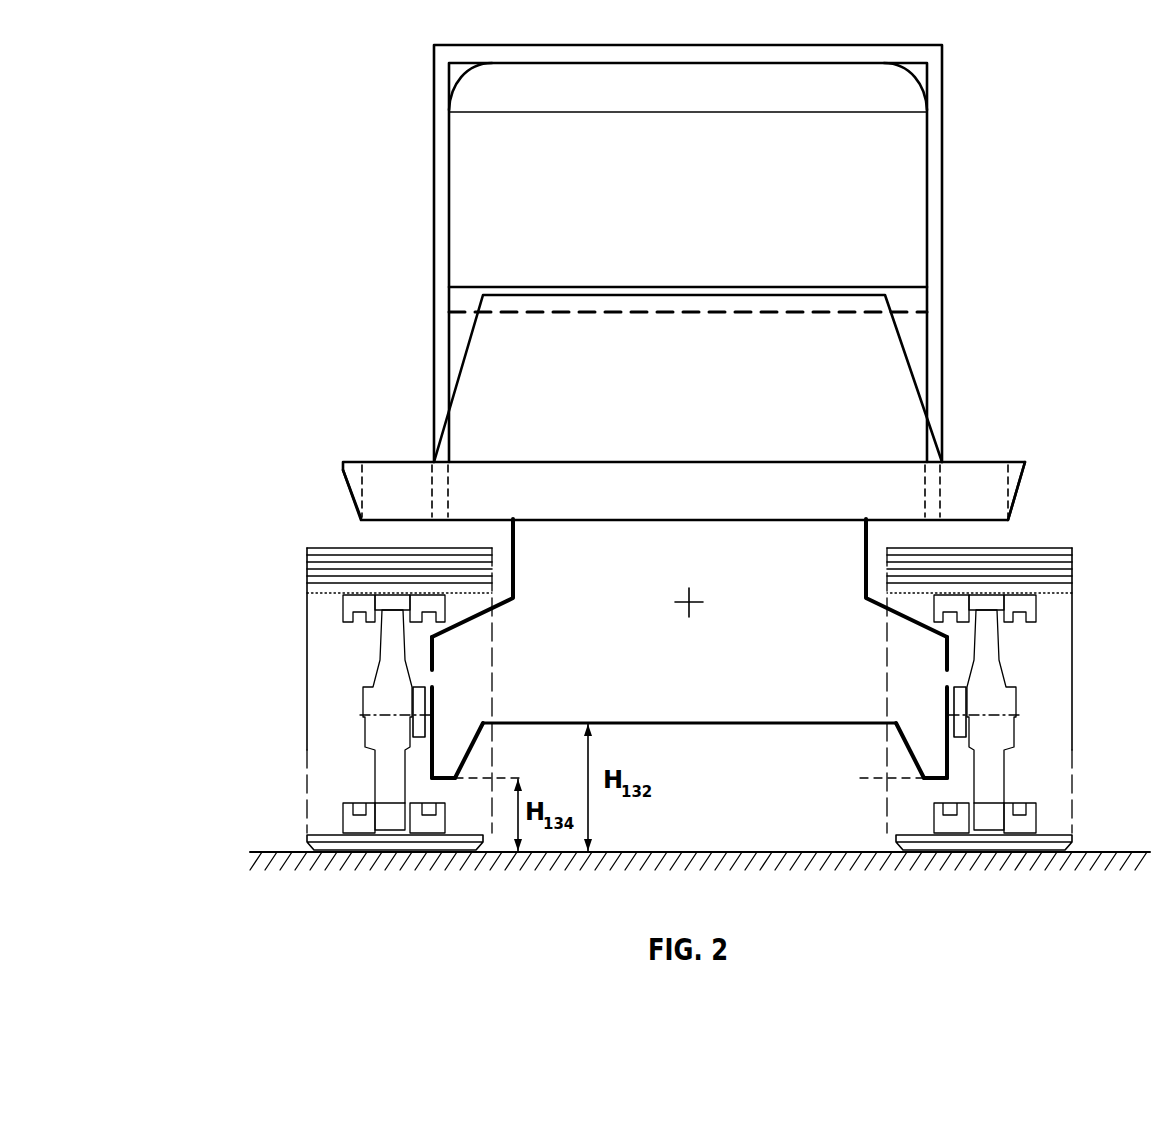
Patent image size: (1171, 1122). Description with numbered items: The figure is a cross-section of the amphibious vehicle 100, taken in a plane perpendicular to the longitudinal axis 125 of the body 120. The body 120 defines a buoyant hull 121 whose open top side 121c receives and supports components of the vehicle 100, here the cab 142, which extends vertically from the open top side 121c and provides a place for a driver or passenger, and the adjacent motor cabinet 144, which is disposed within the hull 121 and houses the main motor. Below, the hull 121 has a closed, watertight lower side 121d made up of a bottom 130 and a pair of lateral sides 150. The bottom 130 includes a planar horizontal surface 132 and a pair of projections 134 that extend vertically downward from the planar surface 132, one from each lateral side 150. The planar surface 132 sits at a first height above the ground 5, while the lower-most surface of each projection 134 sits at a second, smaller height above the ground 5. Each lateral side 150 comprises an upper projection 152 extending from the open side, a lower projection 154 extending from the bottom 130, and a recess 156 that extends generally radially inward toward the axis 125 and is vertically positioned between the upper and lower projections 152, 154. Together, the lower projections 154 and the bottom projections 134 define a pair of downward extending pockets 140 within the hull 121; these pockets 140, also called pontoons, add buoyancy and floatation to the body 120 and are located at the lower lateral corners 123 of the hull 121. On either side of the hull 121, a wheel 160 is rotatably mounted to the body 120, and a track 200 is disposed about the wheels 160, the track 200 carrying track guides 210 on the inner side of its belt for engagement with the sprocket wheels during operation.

The amphibious vehicle 100 is at (262, 133).
The cab 142 is at (942, 103).
The motor cabinet 144 is at (899, 341).
The body 120 is at (627, 644).
The buoyant hull 121 is at (327, 465).
The open top side 121c is at (981, 452).
The closed lower side 121d is at (731, 819).
The lateral side 150 is at (681, 553).
The upper projection 152 is at (350, 499).
The recess 156 is at (493, 540).
The longitudinal axis 125 is at (692, 598).
The bottom 130 is at (689, 724).
The planar horizontal surface 132 is at (693, 727).
The projection 134 is at (473, 749).
The pocket 140 is at (683, 722).
The lower projection 154 is at (423, 757).
The wheel 160 is at (366, 679).
The track 200 is at (305, 560).
The track guide 210 is at (345, 820).
The lower lateral corner 123 is at (443, 784).
The ground 5 is at (1127, 852).